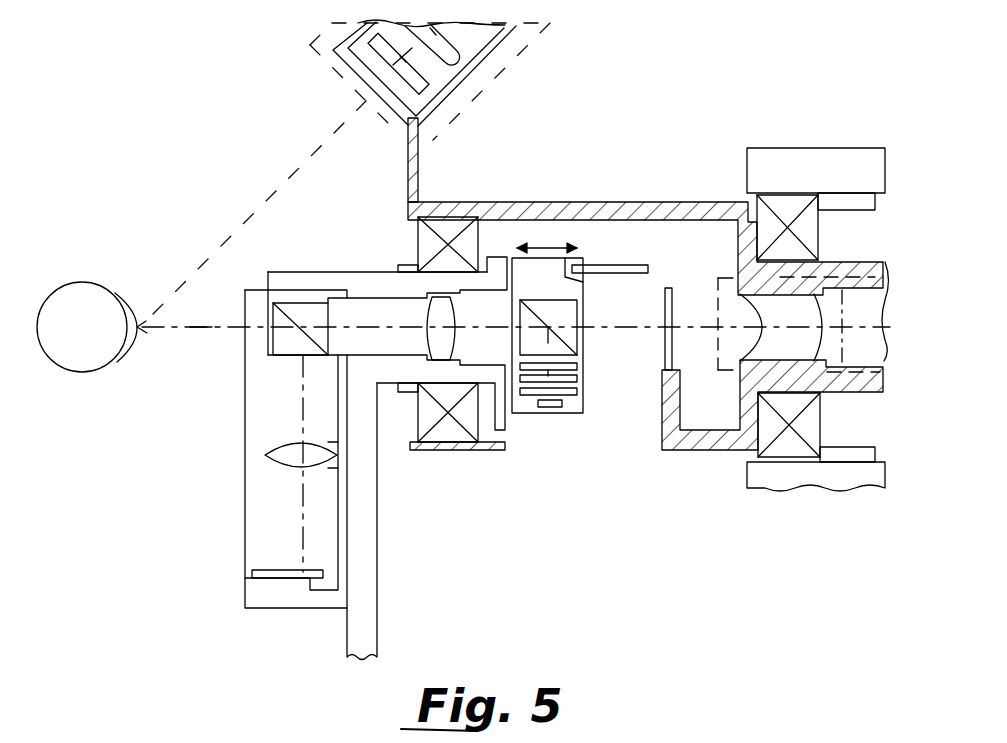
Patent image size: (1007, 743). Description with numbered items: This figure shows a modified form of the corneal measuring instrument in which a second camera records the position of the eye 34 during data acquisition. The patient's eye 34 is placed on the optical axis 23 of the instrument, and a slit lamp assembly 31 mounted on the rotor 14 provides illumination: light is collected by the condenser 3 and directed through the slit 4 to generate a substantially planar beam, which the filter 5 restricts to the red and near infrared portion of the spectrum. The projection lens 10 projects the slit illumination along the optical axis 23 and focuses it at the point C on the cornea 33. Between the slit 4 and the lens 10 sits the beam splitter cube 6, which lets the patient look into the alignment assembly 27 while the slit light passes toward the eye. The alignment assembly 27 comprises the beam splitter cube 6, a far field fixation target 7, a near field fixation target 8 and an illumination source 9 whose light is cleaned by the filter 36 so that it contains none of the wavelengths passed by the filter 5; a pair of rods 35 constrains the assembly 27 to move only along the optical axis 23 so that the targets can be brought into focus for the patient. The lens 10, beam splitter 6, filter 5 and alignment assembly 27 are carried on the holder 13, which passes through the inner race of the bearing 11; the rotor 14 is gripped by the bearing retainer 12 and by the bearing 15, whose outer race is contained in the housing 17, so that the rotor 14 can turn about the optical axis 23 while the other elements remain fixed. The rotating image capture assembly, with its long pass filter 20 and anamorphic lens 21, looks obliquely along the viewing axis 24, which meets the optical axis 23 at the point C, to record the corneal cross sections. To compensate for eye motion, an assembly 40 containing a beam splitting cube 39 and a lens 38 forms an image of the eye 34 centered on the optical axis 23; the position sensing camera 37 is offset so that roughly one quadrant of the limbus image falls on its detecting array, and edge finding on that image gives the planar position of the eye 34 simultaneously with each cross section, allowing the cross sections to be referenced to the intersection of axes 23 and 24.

The condenser 3 is at (845, 333).
The slit 4 is at (762, 333).
The filter 5 is at (663, 368).
The beam splitter cube 6 is at (577, 319).
The far field fixation target 7 is at (577, 365).
The near field fixation target 8 is at (577, 378).
The illumination source 9 is at (559, 406).
The projection lens 10 is at (427, 327).
The bearing 11 is at (418, 222).
The bearing retainer 12 is at (406, 263).
The holder 13 is at (368, 271).
The rotor 14 is at (553, 201).
The bearing 15 is at (820, 241).
The housing 17 is at (821, 148).
The filter 20 is at (430, 90).
The lens 21 is at (458, 53).
The optical axis 23 is at (213, 329).
The viewing axis 24 is at (273, 193).
The alignment assembly 27 is at (538, 419).
The slit lamp assembly 31 is at (718, 278).
The cornea 33 is at (138, 330).
The eye 34 is at (97, 373).
The rods 35 is at (608, 265).
The filter 36 is at (578, 393).
The position sensing camera 37 is at (252, 580).
The lens 38 is at (267, 453).
The beam splitting cube 39 is at (295, 355).
The assembly 40 is at (245, 528).
The point on the cornea C is at (137, 327).